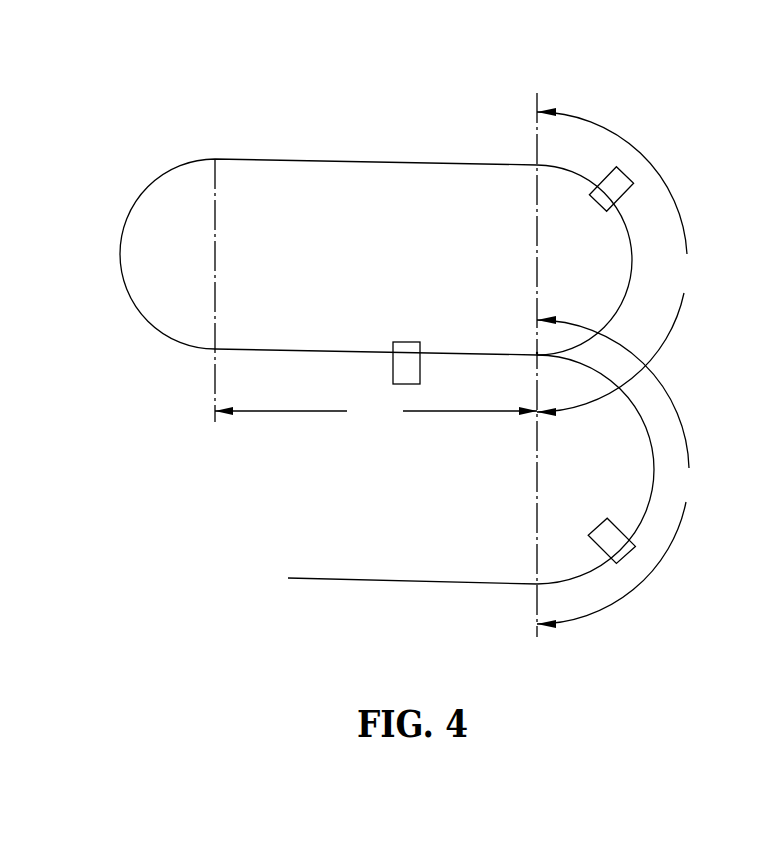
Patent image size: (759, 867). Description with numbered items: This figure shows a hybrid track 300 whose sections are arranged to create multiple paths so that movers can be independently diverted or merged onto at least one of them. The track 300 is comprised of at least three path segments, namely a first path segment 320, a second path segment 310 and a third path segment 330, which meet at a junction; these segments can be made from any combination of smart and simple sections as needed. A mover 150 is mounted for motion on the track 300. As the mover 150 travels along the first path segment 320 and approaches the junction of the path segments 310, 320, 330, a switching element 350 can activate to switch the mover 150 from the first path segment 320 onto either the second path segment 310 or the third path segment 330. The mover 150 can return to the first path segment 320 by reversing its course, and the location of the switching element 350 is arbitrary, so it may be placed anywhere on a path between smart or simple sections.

The track 300 is at (387, 309).
The mover 150 is at (351, 317).
The switching element 350 is at (479, 304).
The second path segment 310 is at (622, 262).
The first path segment 320 is at (376, 410).
The third path segment 330 is at (622, 472).